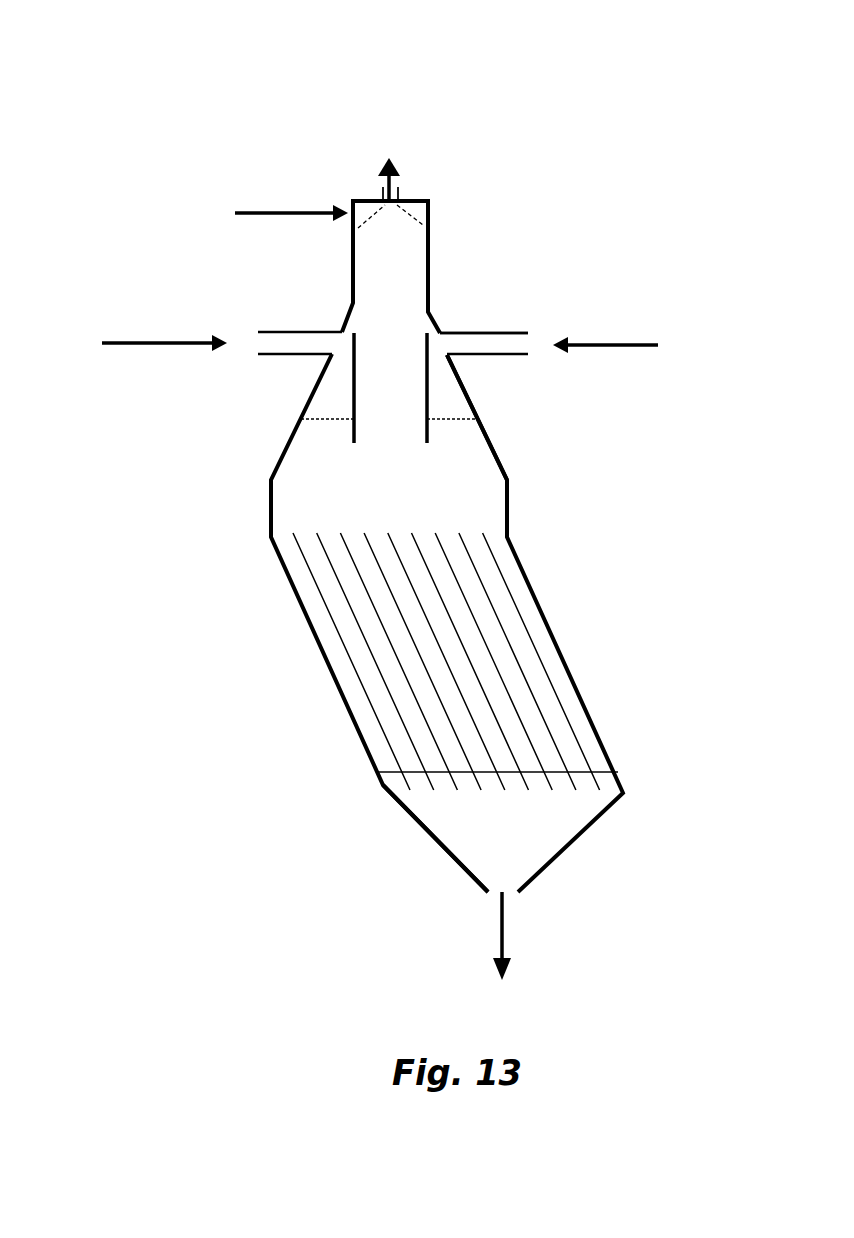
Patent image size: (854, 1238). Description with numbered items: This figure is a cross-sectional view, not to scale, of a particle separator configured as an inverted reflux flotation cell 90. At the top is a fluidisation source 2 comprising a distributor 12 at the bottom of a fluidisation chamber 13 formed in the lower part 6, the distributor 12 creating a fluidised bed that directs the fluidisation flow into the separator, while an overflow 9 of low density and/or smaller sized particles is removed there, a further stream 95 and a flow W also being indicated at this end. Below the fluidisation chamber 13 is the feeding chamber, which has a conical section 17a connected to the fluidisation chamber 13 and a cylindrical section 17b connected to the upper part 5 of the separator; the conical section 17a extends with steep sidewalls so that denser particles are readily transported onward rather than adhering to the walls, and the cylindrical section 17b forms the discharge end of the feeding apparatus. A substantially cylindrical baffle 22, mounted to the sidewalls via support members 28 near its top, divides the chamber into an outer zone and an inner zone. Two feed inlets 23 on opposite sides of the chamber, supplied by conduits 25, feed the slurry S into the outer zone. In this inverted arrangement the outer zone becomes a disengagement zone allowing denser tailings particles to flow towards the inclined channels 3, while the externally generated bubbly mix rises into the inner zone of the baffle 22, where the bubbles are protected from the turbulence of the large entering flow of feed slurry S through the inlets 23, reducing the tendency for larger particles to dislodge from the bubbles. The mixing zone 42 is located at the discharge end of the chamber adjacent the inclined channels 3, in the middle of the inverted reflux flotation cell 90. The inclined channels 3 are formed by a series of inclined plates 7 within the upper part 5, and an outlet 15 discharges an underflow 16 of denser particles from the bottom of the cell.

The inverted reflux flotation cell 90 is at (683, 128).
The fluidisation source 2 is at (517, 213).
The gas outlet pipe 95 is at (383, 190).
The overflow 9 is at (400, 187).
The distributor 12 is at (418, 212).
The fluidisation chamber 13 is at (400, 257).
The lower part 6 is at (430, 267).
The feed inlets 23 is at (443, 345).
The conduits 25 is at (498, 330).
The support members 28 is at (457, 430).
The conical section 17a is at (492, 443).
The cylindrical section 17b is at (508, 515).
The baffle 22 is at (352, 440).
The mixing zone 42 is at (388, 502).
The upper part 5 is at (537, 595).
The inclined plates 7 is at (342, 638).
The inclined channels 3 is at (375, 723).
The outlet 15 is at (492, 895).
The underflow 16 is at (505, 932).
The water inlet flow W is at (302, 210).
The slurry S is at (620, 343).